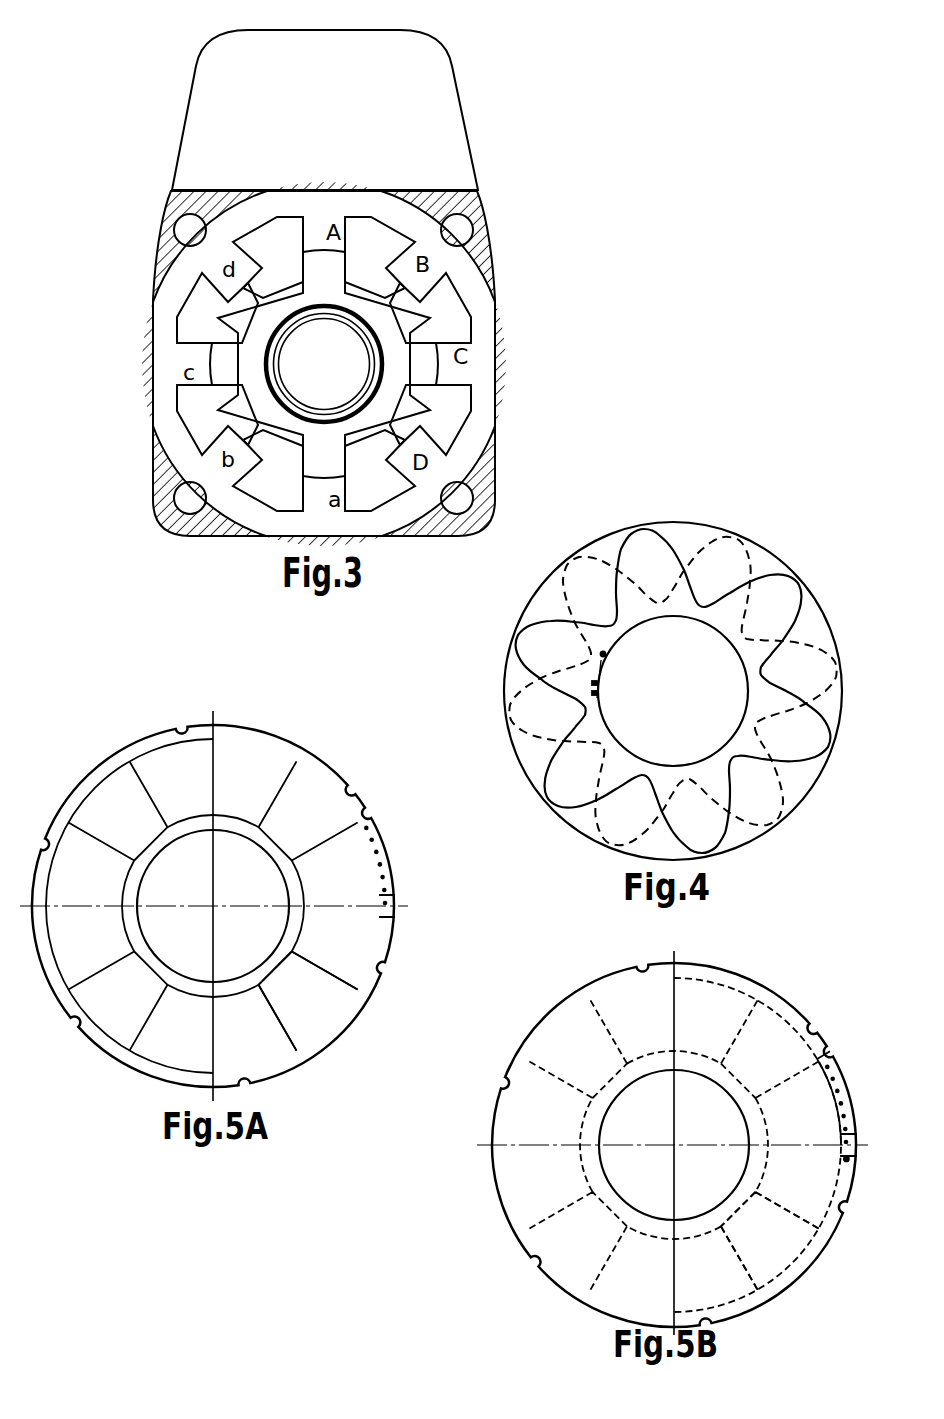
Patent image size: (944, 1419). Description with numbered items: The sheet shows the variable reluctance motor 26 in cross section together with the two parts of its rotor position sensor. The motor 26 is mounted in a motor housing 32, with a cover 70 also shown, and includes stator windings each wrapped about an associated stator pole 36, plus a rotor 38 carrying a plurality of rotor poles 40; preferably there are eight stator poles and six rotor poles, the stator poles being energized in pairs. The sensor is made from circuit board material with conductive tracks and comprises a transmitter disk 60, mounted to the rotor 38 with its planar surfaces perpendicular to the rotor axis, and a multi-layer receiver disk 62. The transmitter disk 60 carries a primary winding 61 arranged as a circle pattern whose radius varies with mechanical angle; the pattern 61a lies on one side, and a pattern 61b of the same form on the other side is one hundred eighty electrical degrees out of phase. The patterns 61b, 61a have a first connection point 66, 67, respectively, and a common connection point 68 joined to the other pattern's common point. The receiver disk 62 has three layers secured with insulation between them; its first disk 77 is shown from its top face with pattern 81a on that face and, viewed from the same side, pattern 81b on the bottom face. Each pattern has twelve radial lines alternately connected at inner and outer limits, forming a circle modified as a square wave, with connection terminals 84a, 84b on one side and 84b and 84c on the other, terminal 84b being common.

In FIG. 3, the variable reluctance motor 26 is at (499, 321).
In FIG. 3, the motor housing 32 is at (495, 238).
In FIG. 3, the stator pole 36 is at (352, 237).
In FIG. 3, the rotor 38 is at (392, 356).
In FIG. 3, the rotor pole 40 is at (214, 420).
In FIG. 3, the cover 70 is at (427, 68).
In FIG. 4, the transmitter disk 60 is at (547, 808).
In FIG. 4, the primary winding 61 is at (542, 743).
In FIG. 4, the pattern 61a is at (667, 543).
In FIG. 4, the pattern 61b is at (747, 533).
In FIG. 4, the first connection point 66 is at (603, 654).
In FIG. 4, the first connection point 67 is at (598, 694).
In FIG. 4, the common connection point 68 is at (598, 683).
In FIG. 5A, the receiver disk 62 is at (213, 885).
In FIG. 5B, the receiver disk 62 is at (674, 1124).
In FIG. 5A, the first disk 77 is at (146, 1077).
In FIG. 5B, the first disk 77 is at (566, 1293).
In FIG. 5A, the pattern 81a is at (325, 979).
In FIG. 5B, the pattern 81b is at (803, 1221).
In FIG. 5A, the connection terminal 84a is at (394, 932).
In FIG. 5A, the connection terminal 84b is at (388, 898).
In FIG. 5B, the connection terminal 84b is at (849, 1138).
In FIG. 5B, the connection terminal 84c is at (845, 1149).